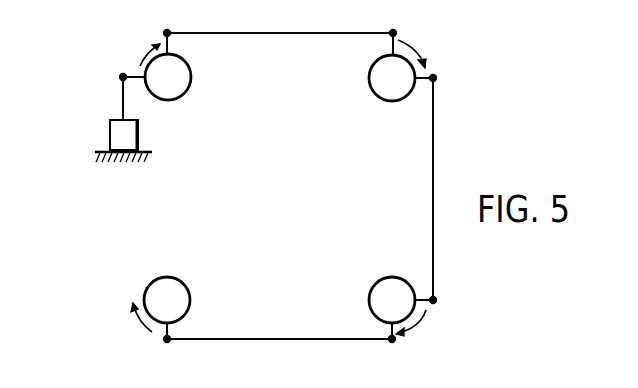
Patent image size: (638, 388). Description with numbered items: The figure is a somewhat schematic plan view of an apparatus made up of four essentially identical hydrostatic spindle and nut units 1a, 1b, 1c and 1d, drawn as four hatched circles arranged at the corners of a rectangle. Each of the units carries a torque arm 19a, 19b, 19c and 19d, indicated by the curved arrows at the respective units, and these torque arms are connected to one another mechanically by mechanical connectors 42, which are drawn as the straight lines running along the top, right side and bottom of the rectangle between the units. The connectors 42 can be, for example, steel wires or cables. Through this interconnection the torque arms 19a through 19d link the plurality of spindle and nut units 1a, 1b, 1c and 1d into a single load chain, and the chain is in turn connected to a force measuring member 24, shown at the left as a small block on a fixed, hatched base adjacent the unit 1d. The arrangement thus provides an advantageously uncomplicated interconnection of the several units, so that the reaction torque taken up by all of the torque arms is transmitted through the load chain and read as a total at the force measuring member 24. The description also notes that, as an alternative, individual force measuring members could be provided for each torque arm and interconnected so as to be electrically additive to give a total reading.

The spindle and nut unit 1a is at (191, 300).
The spindle and nut unit 1b is at (369, 300).
The spindle and nut unit 1c is at (369, 78).
The spindle and nut unit 1d is at (193, 76).
The torque arm 19a is at (162, 338).
The torque arm 19b is at (433, 303).
The torque arm 19c is at (433, 75).
The torque arm 19d is at (165, 34).
The force measuring member 24 is at (110, 133).
The mechanical connector 42 is at (278, 35).